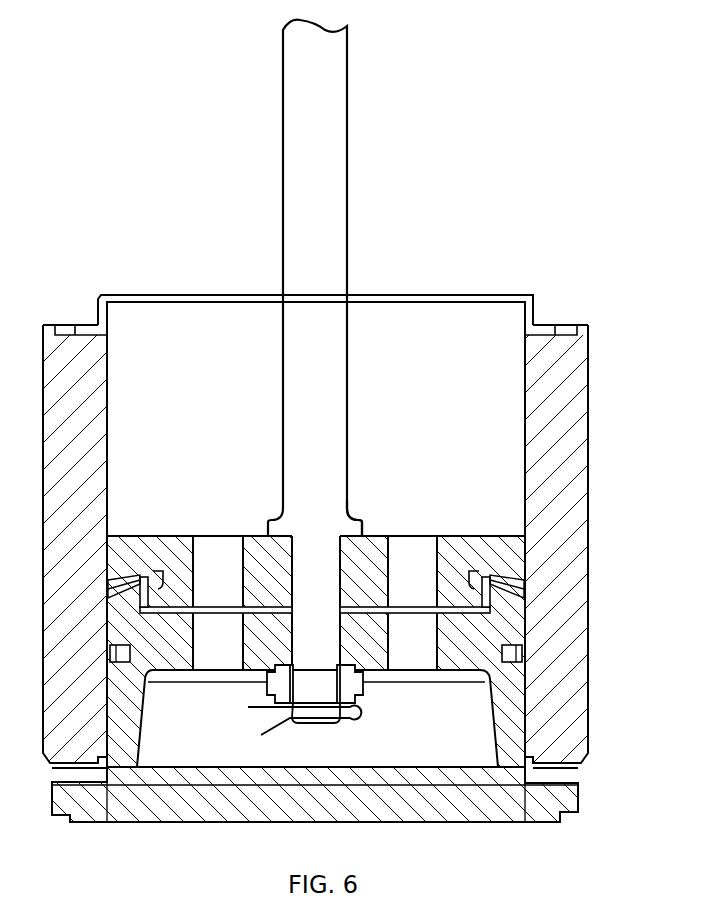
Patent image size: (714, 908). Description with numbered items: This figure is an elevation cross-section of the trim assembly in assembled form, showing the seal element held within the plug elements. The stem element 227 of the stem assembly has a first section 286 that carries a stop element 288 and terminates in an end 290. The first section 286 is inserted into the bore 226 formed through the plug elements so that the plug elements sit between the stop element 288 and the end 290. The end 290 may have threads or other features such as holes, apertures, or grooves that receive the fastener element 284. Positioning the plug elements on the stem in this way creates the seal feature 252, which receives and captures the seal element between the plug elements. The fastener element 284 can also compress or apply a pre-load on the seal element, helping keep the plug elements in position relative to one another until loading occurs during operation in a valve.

The stem element 227 is at (347, 164).
The first section 286 is at (360, 498).
The stop element 288 is at (372, 523).
The bore 226 is at (280, 547).
The seal feature 252 is at (168, 586).
The fastener element 284 is at (232, 675).
The end 290 is at (383, 714).